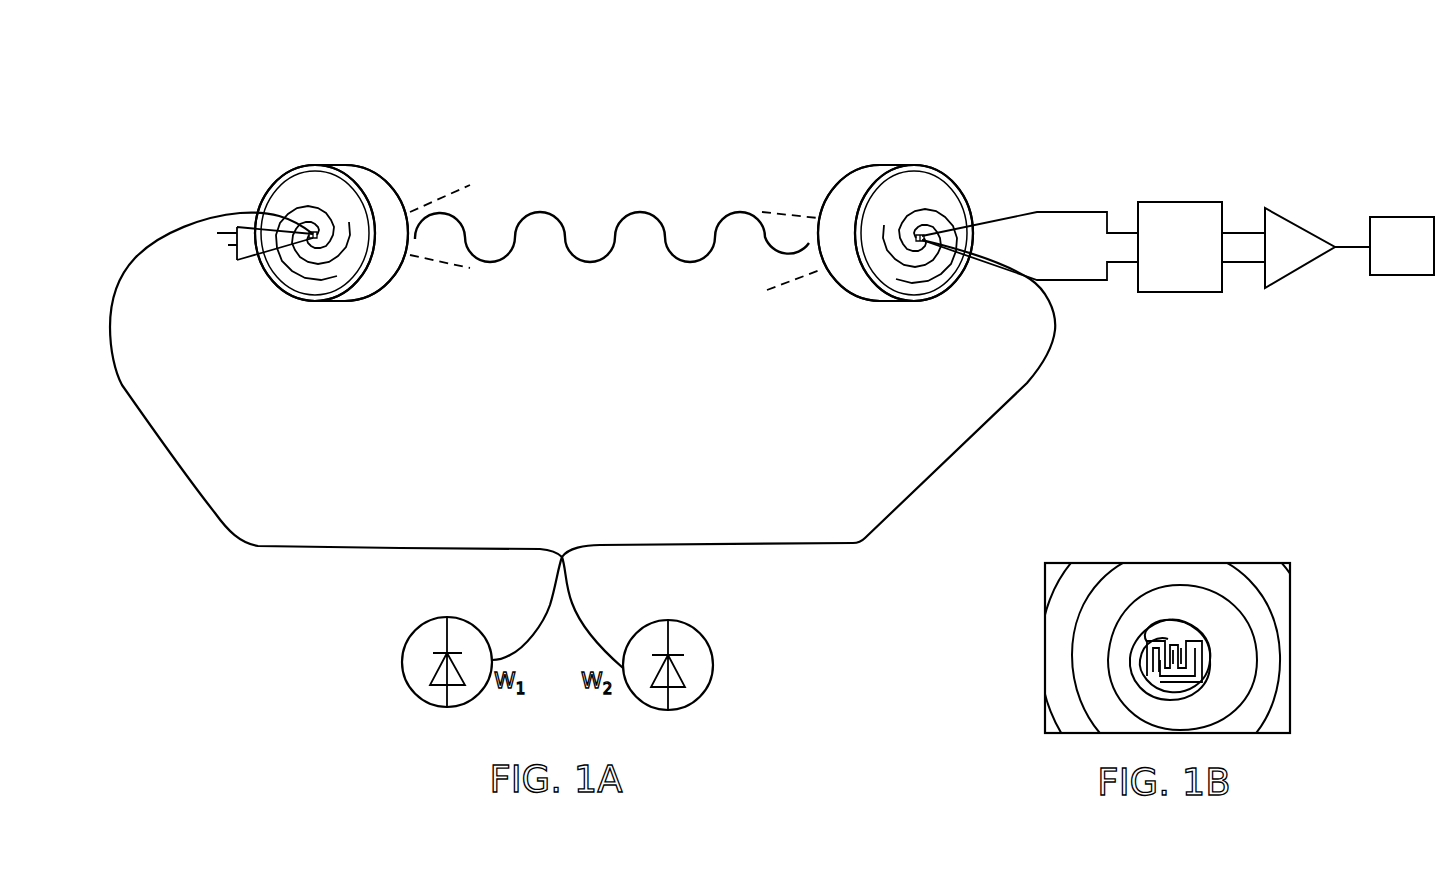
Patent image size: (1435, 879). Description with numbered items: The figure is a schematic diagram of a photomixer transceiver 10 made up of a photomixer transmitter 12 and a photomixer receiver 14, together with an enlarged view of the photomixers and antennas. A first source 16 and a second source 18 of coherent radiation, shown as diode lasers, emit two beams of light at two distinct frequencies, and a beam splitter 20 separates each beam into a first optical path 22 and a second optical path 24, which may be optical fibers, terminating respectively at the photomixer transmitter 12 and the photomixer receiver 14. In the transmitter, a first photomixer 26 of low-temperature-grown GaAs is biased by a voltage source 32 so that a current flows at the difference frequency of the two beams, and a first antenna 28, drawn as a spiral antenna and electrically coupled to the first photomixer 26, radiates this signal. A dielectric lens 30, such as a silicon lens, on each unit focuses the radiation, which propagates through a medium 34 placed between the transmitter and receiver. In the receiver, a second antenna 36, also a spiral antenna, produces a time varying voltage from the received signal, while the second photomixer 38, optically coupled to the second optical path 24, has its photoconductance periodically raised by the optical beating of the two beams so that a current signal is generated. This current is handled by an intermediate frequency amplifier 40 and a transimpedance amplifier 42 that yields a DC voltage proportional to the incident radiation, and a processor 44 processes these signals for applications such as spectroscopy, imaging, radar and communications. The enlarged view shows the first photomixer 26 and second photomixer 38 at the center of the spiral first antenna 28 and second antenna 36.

In FIG. 1A, the photomixer transceiver 10 is at (626, 82).
In FIG. 1A, the photomixer transmitter 12 is at (331, 208).
In FIG. 1A, the photomixer receiver 14 is at (916, 207).
In FIG. 1A, the first source of coherent radiation 16 is at (407, 632).
In FIG. 1A, the second source of coherent radiation 18 is at (697, 630).
In FIG. 1A, the beam splitter 20 is at (566, 559).
In FIG. 1A, the first optical path 22 is at (428, 547).
In FIG. 1A, the second optical path 24 is at (742, 542).
In FIG. 1A, the first photomixer 26 is at (318, 225).
In FIG. 1B, the first photomixer 26 is at (1186, 598).
In FIG. 1A, the first antenna 28 is at (305, 279).
In FIG. 1B, the first antenna 28 is at (1208, 658).
In FIG. 1A, the dielectric lens 30 is at (378, 194).
In FIG. 1A, the voltage source 32 is at (233, 258).
In FIG. 1A, the medium 34 is at (597, 262).
In FIG. 1A, the second antenna 36 is at (933, 280).
In FIG. 1B, the second antenna 36 is at (1263, 647).
In FIG. 1A, the second photomixer 38 is at (933, 227).
In FIG. 1B, the second photomixer 38 is at (1160, 647).
In FIG. 1A, the intermediate frequency amplifier 40 is at (1178, 292).
In FIG. 1A, the transimpedance amplifier 42 is at (1299, 270).
In FIG. 1A, the processor 44 is at (1402, 276).